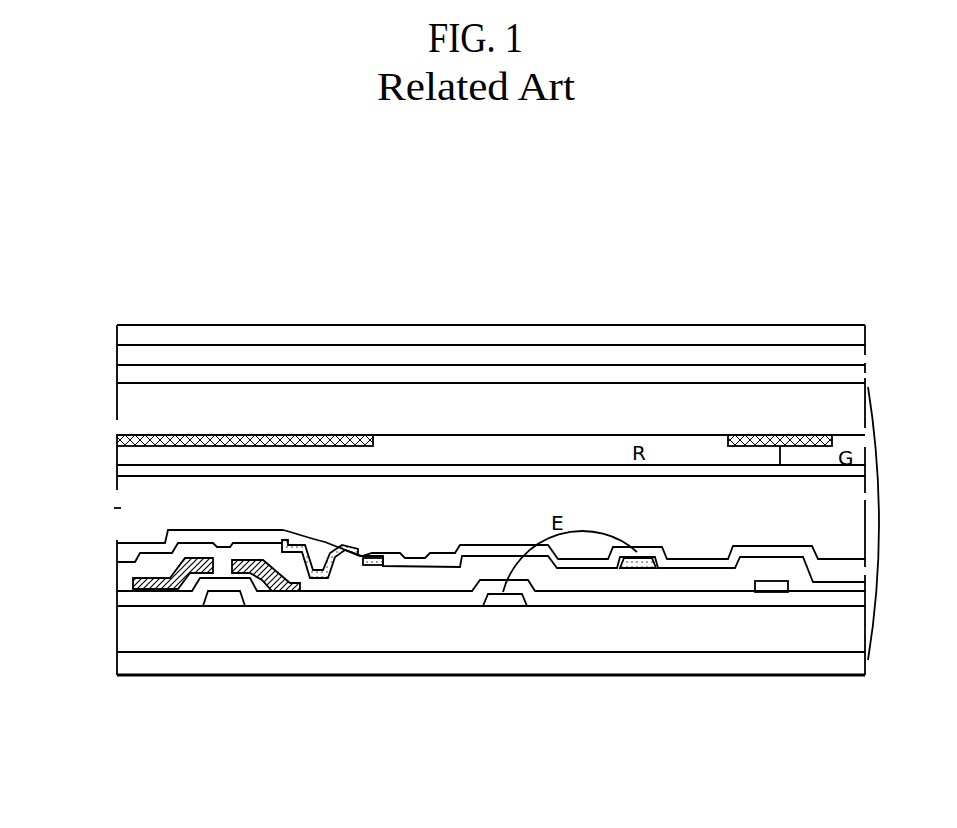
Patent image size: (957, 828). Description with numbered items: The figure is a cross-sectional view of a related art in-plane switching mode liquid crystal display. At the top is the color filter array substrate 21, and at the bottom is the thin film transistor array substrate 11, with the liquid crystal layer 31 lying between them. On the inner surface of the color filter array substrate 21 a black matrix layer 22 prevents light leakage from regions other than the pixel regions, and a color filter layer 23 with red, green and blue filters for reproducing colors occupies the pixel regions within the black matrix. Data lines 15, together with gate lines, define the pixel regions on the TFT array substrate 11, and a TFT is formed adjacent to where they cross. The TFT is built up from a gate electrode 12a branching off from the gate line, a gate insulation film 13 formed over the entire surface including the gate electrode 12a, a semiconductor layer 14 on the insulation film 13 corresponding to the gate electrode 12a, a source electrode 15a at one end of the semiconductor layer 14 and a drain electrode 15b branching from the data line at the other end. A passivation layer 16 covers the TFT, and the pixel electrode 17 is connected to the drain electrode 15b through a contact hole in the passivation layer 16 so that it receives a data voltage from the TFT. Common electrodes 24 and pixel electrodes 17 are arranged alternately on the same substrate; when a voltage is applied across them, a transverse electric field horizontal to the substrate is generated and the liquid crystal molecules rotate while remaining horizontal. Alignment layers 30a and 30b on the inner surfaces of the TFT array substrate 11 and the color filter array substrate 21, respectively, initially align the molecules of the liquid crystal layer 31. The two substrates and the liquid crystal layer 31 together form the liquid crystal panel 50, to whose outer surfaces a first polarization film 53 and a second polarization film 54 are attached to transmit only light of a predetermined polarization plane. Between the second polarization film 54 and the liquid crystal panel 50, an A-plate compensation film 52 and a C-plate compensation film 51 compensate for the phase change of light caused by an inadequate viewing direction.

The thin film transistor array substrate 11 is at (148, 638).
The gate electrode 12a is at (218, 600).
The gate insulation film 13 is at (580, 598).
The semiconductor layer 14 is at (272, 587).
The data line 15 is at (777, 587).
The source electrode 15a is at (135, 588).
The drain electrode 15b is at (313, 590).
The passivation layer 16 is at (682, 578).
The pixel electrode 17 is at (373, 566).
The color filter array substrate 21 is at (117, 392).
The black matrix layer 22 is at (117, 437).
The color filter layer 23 is at (538, 447).
The common electrode 24 is at (503, 593).
The alignment layer 30a is at (120, 548).
The alignment layer 30b is at (117, 470).
The liquid crystal layer 31 is at (120, 507).
The liquid crystal panel 50 is at (509, 500).
The C-plate compensation film 51 is at (250, 375).
The A-plate compensation film 52 is at (331, 357).
The first polarization film 53 is at (748, 668).
The second polarization film 54 is at (402, 335).